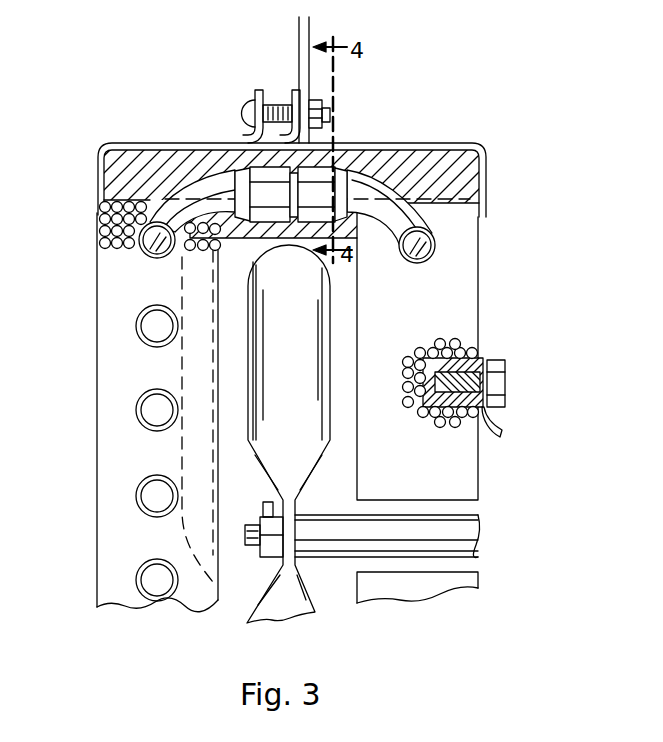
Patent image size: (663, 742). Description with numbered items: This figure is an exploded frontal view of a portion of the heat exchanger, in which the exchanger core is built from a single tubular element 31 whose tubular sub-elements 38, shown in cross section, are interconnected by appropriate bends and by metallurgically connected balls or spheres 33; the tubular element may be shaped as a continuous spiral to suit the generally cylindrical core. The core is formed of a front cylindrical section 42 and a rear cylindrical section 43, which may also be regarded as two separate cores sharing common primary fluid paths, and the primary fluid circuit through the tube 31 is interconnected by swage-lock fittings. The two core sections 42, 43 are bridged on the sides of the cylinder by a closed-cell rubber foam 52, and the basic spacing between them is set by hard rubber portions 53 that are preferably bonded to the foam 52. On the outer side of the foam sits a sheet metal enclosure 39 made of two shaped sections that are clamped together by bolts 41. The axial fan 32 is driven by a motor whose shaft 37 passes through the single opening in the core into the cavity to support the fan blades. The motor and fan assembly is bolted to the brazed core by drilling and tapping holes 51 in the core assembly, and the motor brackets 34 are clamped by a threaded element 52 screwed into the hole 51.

The tubular element 31 is at (140, 257).
The axial fan 32 is at (302, 334).
The balls or spheres 33 is at (458, 347).
The motor brackets 34 is at (500, 427).
The shaft 37 is at (468, 517).
The tubular sub-elements 38 is at (138, 395).
The sheet metal enclosure 39 is at (462, 144).
The bolts 41 is at (281, 106).
The front cylindrical section 42 is at (97, 507).
The rear cylindrical section 43 is at (480, 232).
The holes 51 is at (483, 357).
The threaded element 52 is at (352, 158).
The hard rubber portions 53 is at (407, 150).